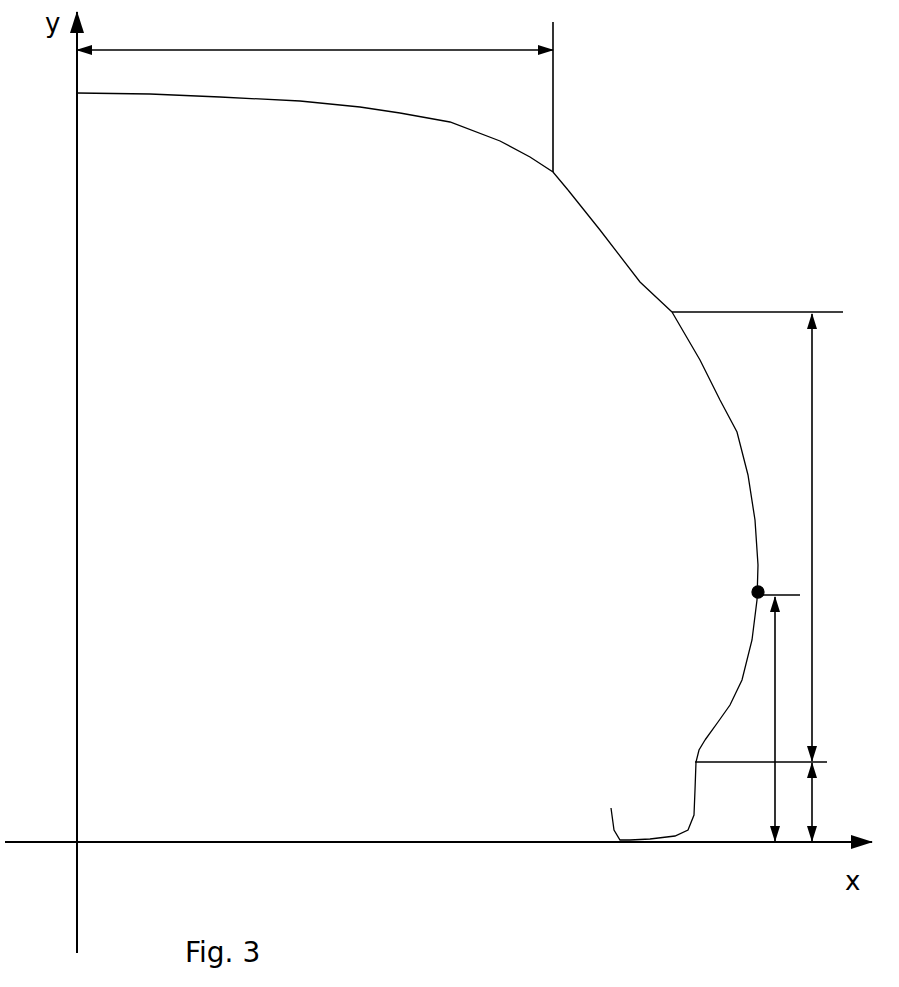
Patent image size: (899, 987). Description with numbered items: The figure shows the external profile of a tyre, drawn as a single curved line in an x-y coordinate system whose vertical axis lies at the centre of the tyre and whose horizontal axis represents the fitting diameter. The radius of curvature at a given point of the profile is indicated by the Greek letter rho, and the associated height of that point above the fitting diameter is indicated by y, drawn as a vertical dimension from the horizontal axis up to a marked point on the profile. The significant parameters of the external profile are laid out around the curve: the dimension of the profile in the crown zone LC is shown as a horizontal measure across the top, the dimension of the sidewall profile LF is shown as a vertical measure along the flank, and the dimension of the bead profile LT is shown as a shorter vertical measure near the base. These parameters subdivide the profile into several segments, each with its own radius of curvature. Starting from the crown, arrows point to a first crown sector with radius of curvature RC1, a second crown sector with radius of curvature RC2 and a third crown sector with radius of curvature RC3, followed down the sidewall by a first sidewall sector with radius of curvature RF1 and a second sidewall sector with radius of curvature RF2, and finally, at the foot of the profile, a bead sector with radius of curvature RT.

The dimensions of the external profile in the crown zone LC is at (315, 92).
The radius of curvature of first crown sector RC1 is at (107, 445).
The radius of curvature of second crown sector RC2 is at (209, 447).
The third crown radius RC3 is at (314, 472).
The radius of curvature of first sidewall sector RF1 is at (380, 483).
The radius of curvature of second sidewall sector RF2 is at (737, 430).
The dimensions of the external profile of the sidewall LF is at (759, 537).
The distance of the point on the profile from the fitting diameter y is at (773, 718).
The radius of curvature of bead sector RT is at (690, 785).
The dimensions of the external profile of the bead LT is at (839, 802).